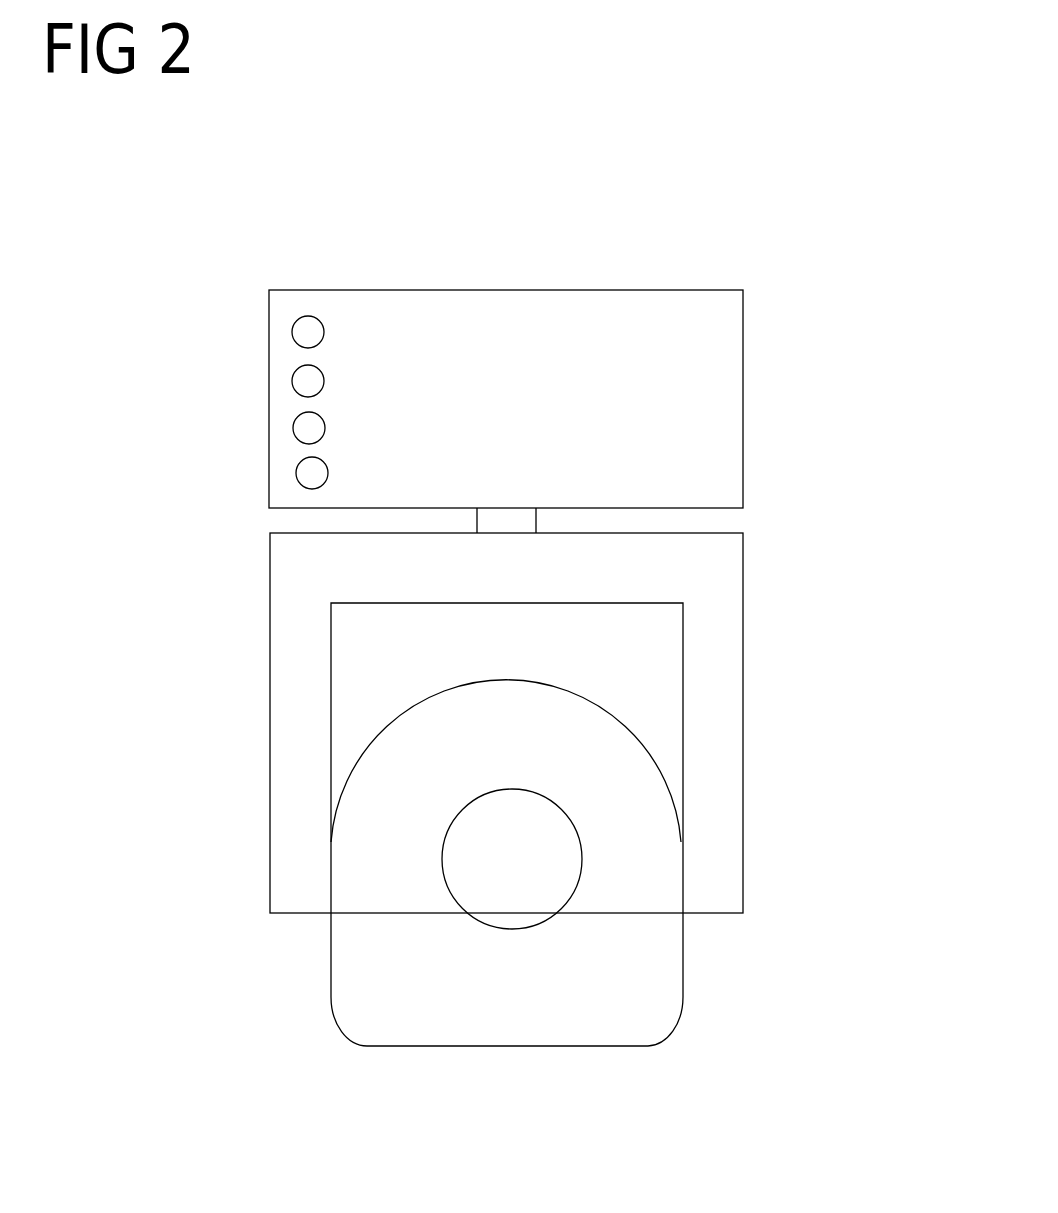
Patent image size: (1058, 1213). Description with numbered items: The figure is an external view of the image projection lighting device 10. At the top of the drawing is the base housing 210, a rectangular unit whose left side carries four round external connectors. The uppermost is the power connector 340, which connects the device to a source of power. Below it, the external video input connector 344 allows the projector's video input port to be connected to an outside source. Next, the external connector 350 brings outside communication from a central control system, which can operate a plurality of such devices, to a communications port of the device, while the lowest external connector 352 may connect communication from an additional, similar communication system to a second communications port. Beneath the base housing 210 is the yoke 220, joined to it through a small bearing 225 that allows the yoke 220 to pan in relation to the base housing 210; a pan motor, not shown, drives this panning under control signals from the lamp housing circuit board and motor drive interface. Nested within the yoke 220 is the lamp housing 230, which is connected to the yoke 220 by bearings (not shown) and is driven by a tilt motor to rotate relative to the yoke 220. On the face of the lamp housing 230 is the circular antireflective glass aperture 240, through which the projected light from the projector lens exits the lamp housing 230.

The image projection lighting device 10 is at (845, 370).
The base housing 210 is at (338, 272).
The yoke 220 is at (246, 738).
The bearing 225 is at (505, 514).
The lamp housing 230 is at (640, 718).
The antireflective glass aperture 240 is at (607, 867).
The power connector 340 is at (288, 333).
The external video input connector 344 is at (284, 388).
The external connector 350 is at (289, 438).
The external connector 352 is at (293, 473).